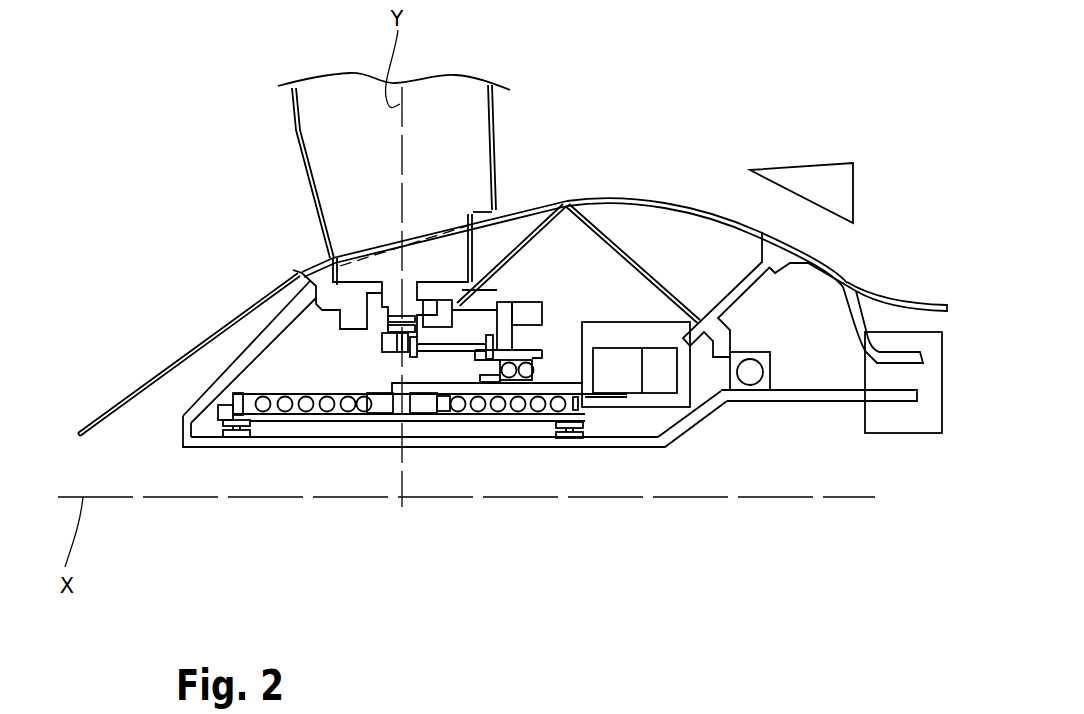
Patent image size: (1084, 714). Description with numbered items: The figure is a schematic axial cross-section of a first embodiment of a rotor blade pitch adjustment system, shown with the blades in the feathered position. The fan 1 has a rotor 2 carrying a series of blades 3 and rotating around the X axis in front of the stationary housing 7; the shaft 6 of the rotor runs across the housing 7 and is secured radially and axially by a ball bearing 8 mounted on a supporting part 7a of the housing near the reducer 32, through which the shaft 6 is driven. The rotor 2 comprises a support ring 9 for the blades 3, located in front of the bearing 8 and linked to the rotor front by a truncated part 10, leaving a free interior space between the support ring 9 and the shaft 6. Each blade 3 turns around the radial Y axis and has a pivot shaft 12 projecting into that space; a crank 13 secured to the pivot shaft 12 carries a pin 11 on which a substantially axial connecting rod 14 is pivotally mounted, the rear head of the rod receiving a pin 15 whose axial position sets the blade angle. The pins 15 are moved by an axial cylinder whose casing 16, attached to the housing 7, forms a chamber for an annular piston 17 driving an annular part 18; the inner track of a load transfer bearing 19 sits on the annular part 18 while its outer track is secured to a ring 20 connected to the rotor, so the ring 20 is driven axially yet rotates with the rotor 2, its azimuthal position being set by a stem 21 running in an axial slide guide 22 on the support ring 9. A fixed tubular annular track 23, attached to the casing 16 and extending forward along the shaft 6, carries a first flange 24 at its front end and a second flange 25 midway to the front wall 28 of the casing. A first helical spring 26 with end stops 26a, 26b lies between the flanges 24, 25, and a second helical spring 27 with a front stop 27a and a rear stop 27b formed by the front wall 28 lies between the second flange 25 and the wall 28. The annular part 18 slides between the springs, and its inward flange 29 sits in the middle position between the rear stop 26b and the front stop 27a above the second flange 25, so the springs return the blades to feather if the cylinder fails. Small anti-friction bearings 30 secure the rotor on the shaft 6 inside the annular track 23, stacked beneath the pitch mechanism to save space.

The fan 1 is at (186, 182).
The rotor 2 is at (113, 296).
The blade 3 is at (327, 147).
The shaft 6 is at (315, 442).
The stationary housing 7 is at (858, 240).
The supporting part 7a is at (733, 301).
The bearing 8 is at (768, 363).
The support ring 9 is at (328, 302).
The truncated part 10 is at (240, 376).
The pin 11 is at (252, 390).
The pivot shaft 12 is at (393, 280).
The crank 13 is at (390, 384).
The connecting rod 14 is at (458, 348).
The pin 15 is at (545, 323).
The casing 16 is at (722, 396).
The piston 17 is at (670, 380).
The annular part 18 is at (463, 400).
The load transfer bearing 19 is at (595, 378).
The ring 20 is at (580, 343).
The stem 21 is at (498, 302).
The axial slide guide 22 is at (528, 303).
The fixed annular track 23 is at (427, 420).
The first flange 24 is at (140, 388).
The second flange 25 is at (398, 413).
The first helical spring 26 is at (285, 408).
The front stop 26a is at (238, 407).
The rear stop 26b is at (374, 412).
The second helical spring 27 is at (499, 411).
The front stop 27a is at (473, 401).
The rear stop 27b is at (540, 412).
The front wall 28 is at (598, 397).
The flange 29 is at (205, 416).
The bearings 30 is at (224, 428).
The reducer 32 is at (893, 410).